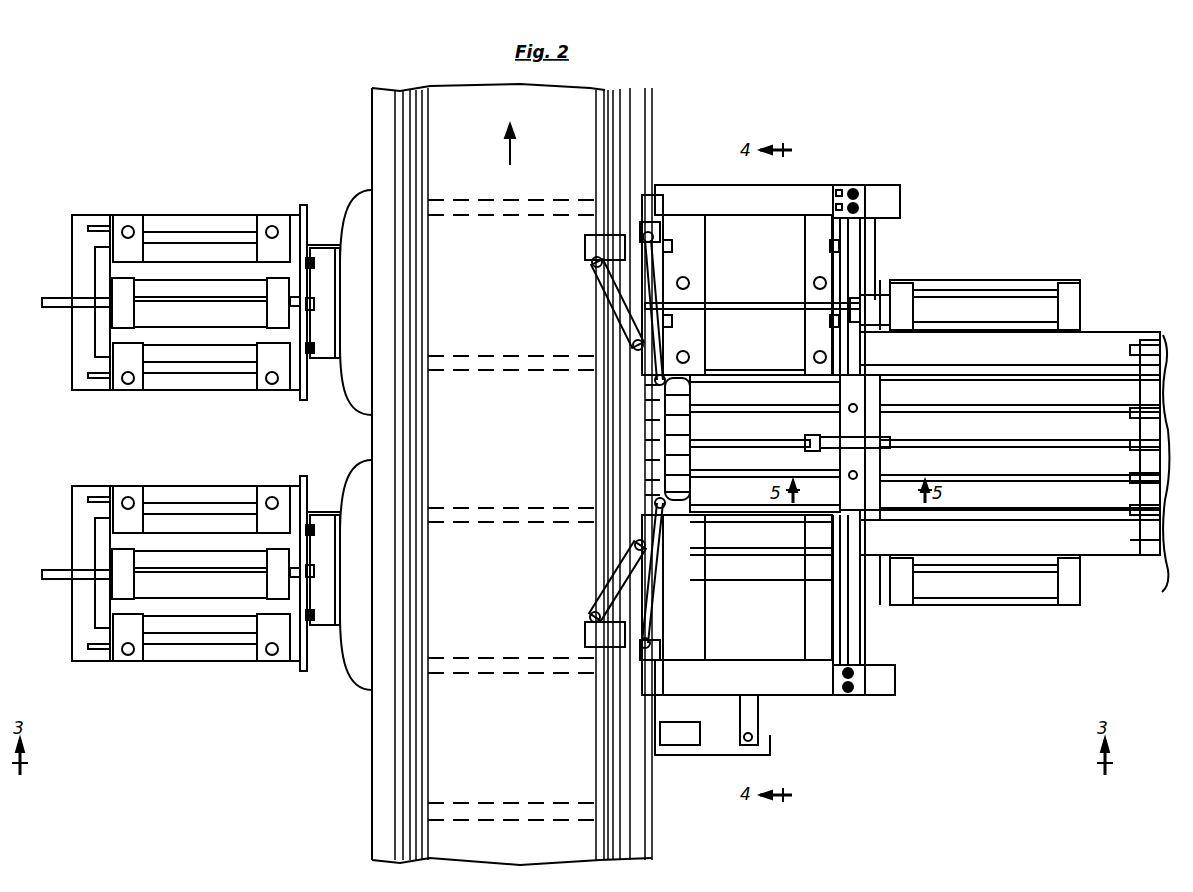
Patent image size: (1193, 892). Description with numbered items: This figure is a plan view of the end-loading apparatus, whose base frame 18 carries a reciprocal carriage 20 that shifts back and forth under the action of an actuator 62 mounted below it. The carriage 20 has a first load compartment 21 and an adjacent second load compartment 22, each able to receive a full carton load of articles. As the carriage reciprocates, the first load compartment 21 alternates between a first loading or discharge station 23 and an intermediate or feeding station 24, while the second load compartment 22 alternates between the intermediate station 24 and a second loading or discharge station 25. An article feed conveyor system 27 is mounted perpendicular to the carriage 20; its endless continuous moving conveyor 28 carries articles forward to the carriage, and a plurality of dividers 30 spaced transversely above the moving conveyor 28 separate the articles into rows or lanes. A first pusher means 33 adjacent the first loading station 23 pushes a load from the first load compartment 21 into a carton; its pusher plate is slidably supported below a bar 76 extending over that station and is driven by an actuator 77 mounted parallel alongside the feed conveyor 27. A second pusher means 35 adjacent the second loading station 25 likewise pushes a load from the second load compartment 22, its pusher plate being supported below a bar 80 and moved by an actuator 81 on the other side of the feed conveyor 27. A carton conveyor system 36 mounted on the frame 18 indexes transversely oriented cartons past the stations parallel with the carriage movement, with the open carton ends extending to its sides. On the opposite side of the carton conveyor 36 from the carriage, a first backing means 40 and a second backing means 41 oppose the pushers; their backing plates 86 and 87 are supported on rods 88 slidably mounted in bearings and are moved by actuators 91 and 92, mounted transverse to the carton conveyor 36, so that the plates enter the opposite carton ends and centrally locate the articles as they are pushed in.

The base frame 18 is at (790, 193).
The reciprocal carriage 20 is at (738, 385).
The first load compartment 21 is at (820, 618).
The second load compartment 22 is at (765, 385).
The first loading or discharge station 23 is at (747, 587).
The intermediate or feeding station 24 is at (790, 433).
The second loading or discharge station 25 is at (751, 295).
The article feed conveyor system 27 is at (1100, 390).
The endless continuous moving conveyor 28 is at (1162, 560).
The dividers 30 is at (990, 408).
The first pusher means 33 is at (975, 588).
The second pusher means 35 is at (965, 292).
The carton conveyor system 36 is at (385, 772).
The first backing means 40 is at (322, 563).
The second backing means 41 is at (322, 306).
The actuator 62 is at (757, 712).
The bar 76 is at (740, 580).
The actuator 77 is at (1045, 582).
The bar 80 is at (733, 308).
The actuator 81 is at (1015, 298).
The backing plate 86 is at (337, 535).
The backing plate 87 is at (338, 280).
The rods 88 is at (62, 312).
The actuator 91 is at (189, 573).
The actuator 92 is at (189, 302).